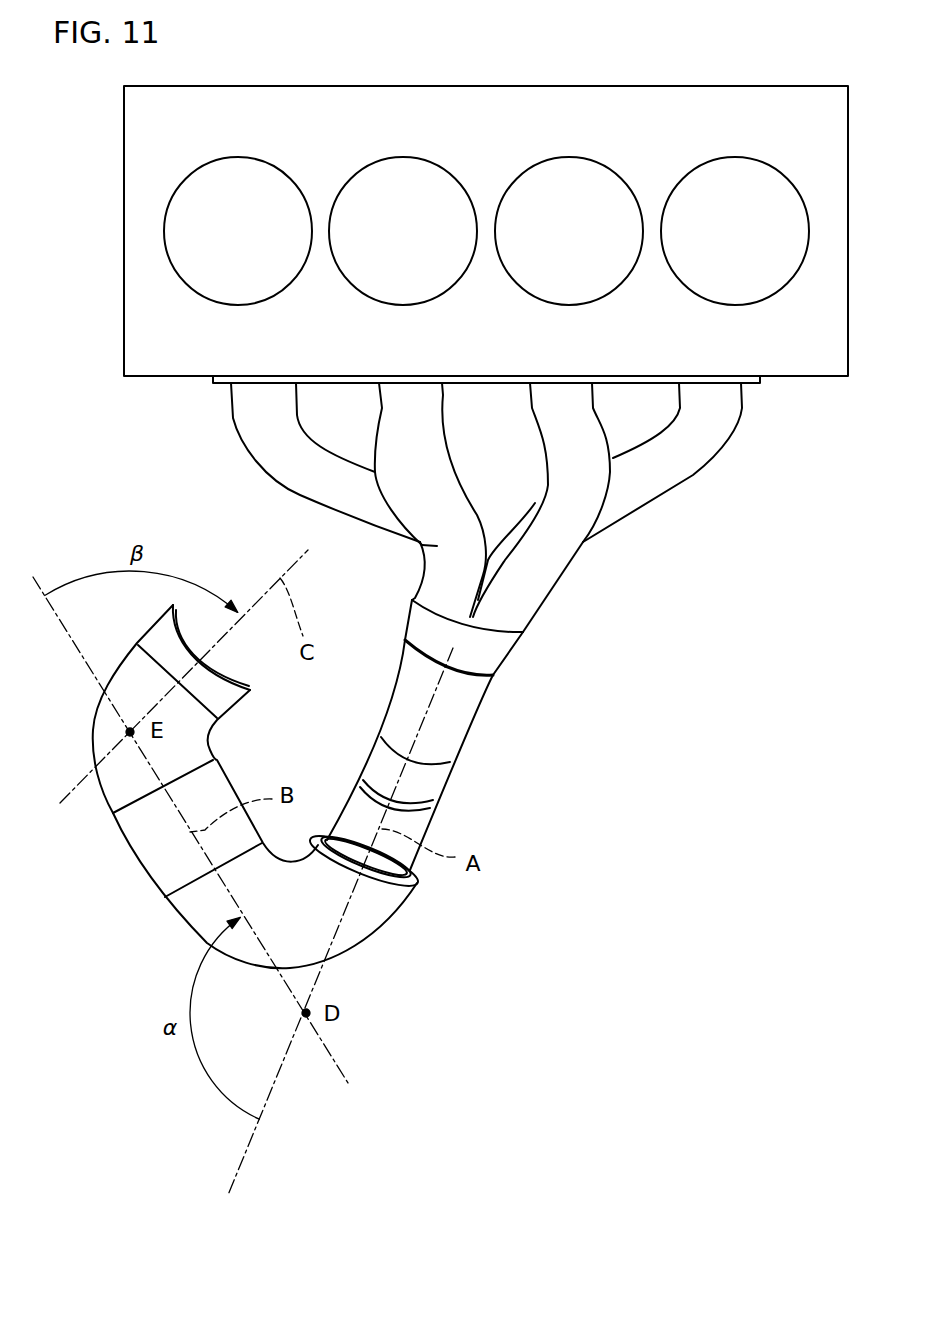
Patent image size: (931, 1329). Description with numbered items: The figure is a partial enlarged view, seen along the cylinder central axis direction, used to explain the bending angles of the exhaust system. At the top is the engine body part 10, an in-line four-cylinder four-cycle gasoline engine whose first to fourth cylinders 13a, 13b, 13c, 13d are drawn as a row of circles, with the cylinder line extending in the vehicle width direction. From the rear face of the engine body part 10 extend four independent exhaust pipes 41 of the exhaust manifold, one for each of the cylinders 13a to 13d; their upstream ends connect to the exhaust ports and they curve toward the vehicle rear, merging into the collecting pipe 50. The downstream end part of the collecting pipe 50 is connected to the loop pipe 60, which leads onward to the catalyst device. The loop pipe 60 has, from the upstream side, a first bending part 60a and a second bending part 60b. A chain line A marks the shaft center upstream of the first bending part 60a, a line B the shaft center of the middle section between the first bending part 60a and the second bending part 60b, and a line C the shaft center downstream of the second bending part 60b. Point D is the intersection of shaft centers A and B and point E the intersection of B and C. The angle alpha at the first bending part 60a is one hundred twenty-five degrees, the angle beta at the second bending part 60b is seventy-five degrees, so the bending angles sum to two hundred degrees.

The engine body part 10 is at (108, 236).
The first cylinder 13a is at (216, 246).
The second cylinder 13b is at (381, 246).
The third cylinder 13c is at (547, 246).
The fourth cylinder 13d is at (713, 246).
The independent exhaust pipes 41 is at (310, 495).
The collecting pipe 50 is at (478, 762).
The loop pipe 60 is at (133, 898).
The first bending part 60a is at (355, 938).
The second bending part 60b is at (103, 730).